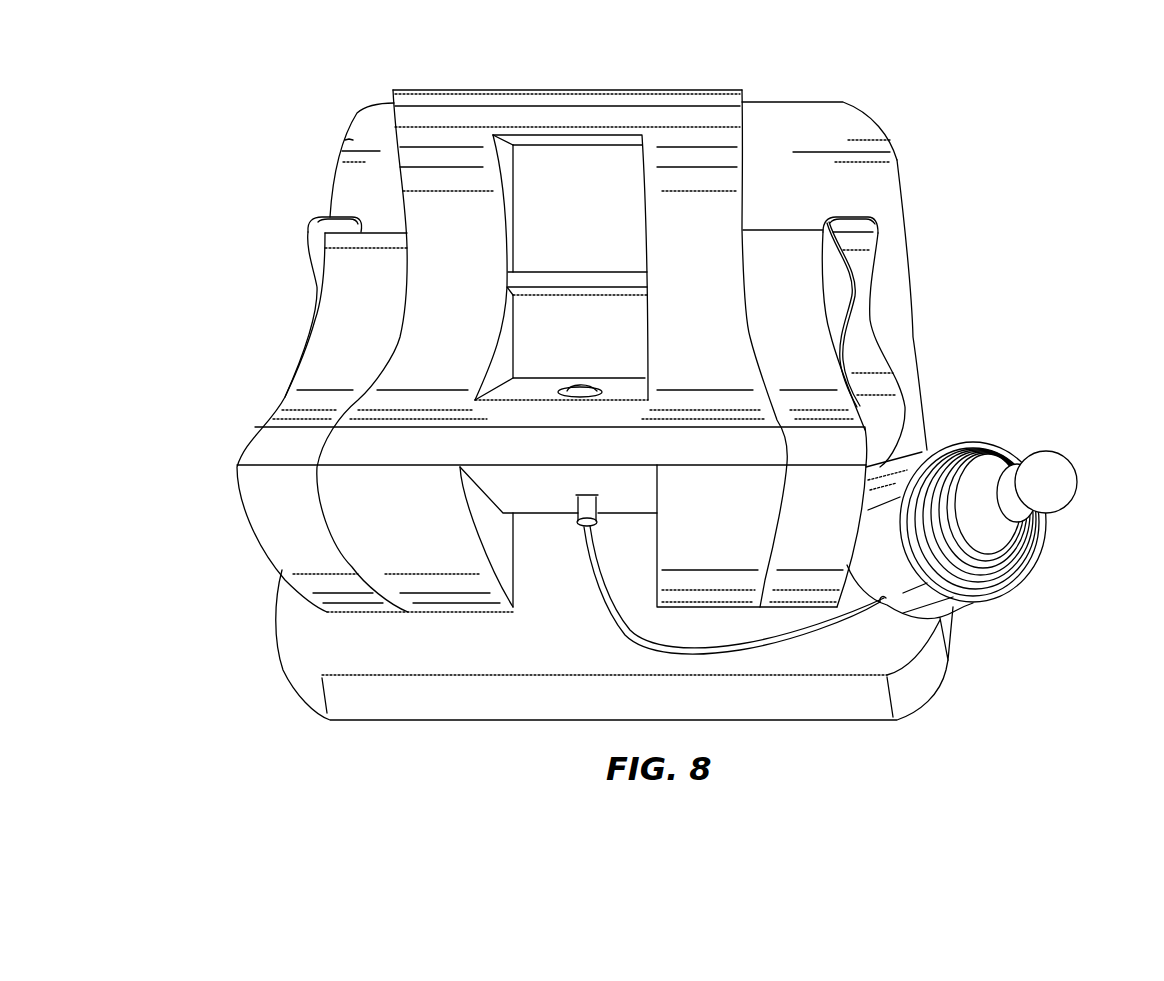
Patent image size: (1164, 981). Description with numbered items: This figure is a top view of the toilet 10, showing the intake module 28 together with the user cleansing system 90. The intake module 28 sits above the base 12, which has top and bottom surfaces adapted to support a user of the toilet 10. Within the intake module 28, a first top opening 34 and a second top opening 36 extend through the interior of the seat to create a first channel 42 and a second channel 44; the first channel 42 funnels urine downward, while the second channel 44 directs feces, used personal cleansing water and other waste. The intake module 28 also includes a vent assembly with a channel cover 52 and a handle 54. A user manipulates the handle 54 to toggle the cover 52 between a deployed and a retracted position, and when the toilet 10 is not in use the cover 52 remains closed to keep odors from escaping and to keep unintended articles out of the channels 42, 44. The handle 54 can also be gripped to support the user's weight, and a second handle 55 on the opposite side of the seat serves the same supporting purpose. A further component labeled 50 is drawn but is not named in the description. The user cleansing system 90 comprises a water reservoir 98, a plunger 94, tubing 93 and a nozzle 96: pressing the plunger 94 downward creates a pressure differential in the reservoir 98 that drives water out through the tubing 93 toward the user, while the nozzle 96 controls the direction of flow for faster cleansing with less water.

The toilet 10 is at (287, 112).
The base 12 is at (892, 277).
The intake module 28 is at (313, 373).
The first top opening 34 is at (578, 153).
The second top opening 36 is at (533, 318).
The first channel 42 is at (630, 230).
The second channel 44 is at (635, 310).
The side wall 50 is at (887, 430).
The channel cover 52 is at (633, 362).
The handle 54 is at (867, 320).
The second handle 55 is at (307, 333).
The user cleansing system 90 is at (993, 519).
The tubing system 93 is at (610, 600).
The plunger 94 is at (1007, 455).
The nozzle 96 is at (583, 383).
The water reservoir 98 is at (963, 603).